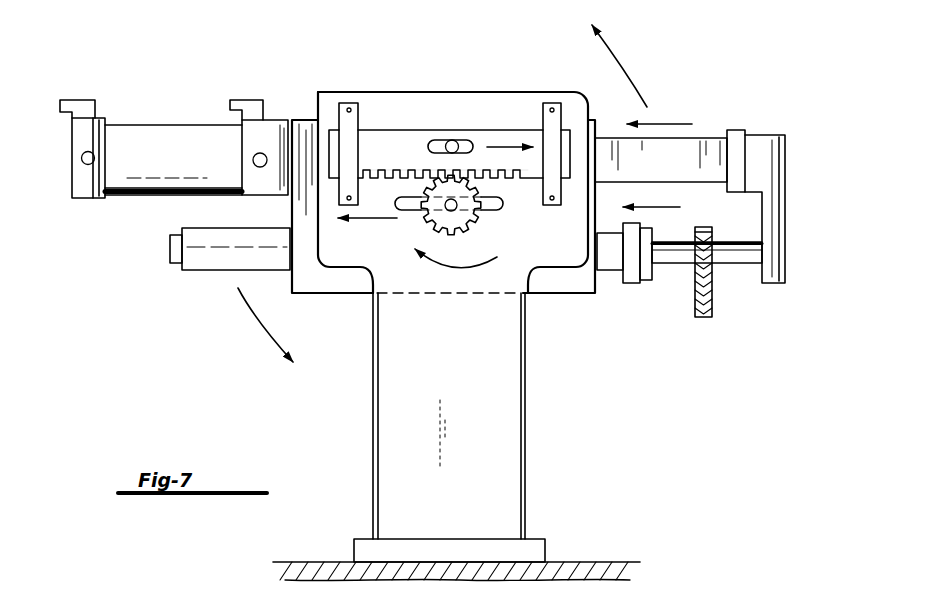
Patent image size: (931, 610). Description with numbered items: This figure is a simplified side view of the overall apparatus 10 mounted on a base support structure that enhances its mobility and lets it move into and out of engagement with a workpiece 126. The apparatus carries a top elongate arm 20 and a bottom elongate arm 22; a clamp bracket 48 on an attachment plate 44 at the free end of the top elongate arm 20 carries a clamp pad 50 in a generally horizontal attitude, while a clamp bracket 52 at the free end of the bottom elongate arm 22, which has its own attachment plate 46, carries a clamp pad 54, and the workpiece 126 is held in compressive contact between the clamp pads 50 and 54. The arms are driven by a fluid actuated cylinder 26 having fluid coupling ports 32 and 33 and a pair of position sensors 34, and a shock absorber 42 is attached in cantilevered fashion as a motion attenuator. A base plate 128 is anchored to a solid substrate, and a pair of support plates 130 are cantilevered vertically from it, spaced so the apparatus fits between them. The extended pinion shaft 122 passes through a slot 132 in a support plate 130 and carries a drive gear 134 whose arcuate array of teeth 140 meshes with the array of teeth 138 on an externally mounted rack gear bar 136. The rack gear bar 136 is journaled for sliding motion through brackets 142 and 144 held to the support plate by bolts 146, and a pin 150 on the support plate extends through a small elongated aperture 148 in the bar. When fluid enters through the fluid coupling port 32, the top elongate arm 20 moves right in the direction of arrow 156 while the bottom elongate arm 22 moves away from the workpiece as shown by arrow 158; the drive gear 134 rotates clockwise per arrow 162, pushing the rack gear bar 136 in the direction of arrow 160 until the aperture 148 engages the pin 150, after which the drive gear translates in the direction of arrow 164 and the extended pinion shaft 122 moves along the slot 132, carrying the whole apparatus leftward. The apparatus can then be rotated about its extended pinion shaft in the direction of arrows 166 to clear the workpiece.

The overall apparatus 10 is at (300, 118).
The top elongate arm 20 is at (702, 177).
The bottom elongate arm 22 is at (607, 272).
The fluid actuated cylinder 26 is at (183, 125).
The fluid coupling port 32 is at (88, 165).
The fluid coupling port 33 is at (253, 162).
The position sensors 34 is at (83, 100).
The shock absorber 42 is at (233, 268).
The attachment plate 44 is at (737, 130).
The attachment plate 46 is at (635, 283).
The clamp bracket 48 is at (790, 187).
The clamp pad 50 is at (745, 264).
The clamp bracket 52 is at (647, 285).
The clamp pad 54 is at (684, 263).
The extended pinion shaft 122 is at (455, 210).
The workpiece 126 is at (712, 297).
The base plate 128 is at (545, 547).
The support plates 130 is at (374, 395).
The slot 132 is at (373, 293).
The drive gear 134 is at (488, 186).
The rack gear bar 136 is at (410, 170).
The array of teeth 138 is at (393, 178).
The arcuate array of teeth 140 is at (488, 218).
The bracket 142 is at (330, 103).
The bracket 144 is at (562, 122).
The bolts 146 is at (552, 107).
The elongated aperture 148 is at (464, 140).
The pin 150 is at (450, 140).
The arrow 156 is at (680, 124).
The arrow 158 is at (680, 207).
The arrow 160 is at (510, 126).
The arrow 162 is at (438, 256).
The arrow 164 is at (377, 219).
The arrows 166 is at (638, 50).